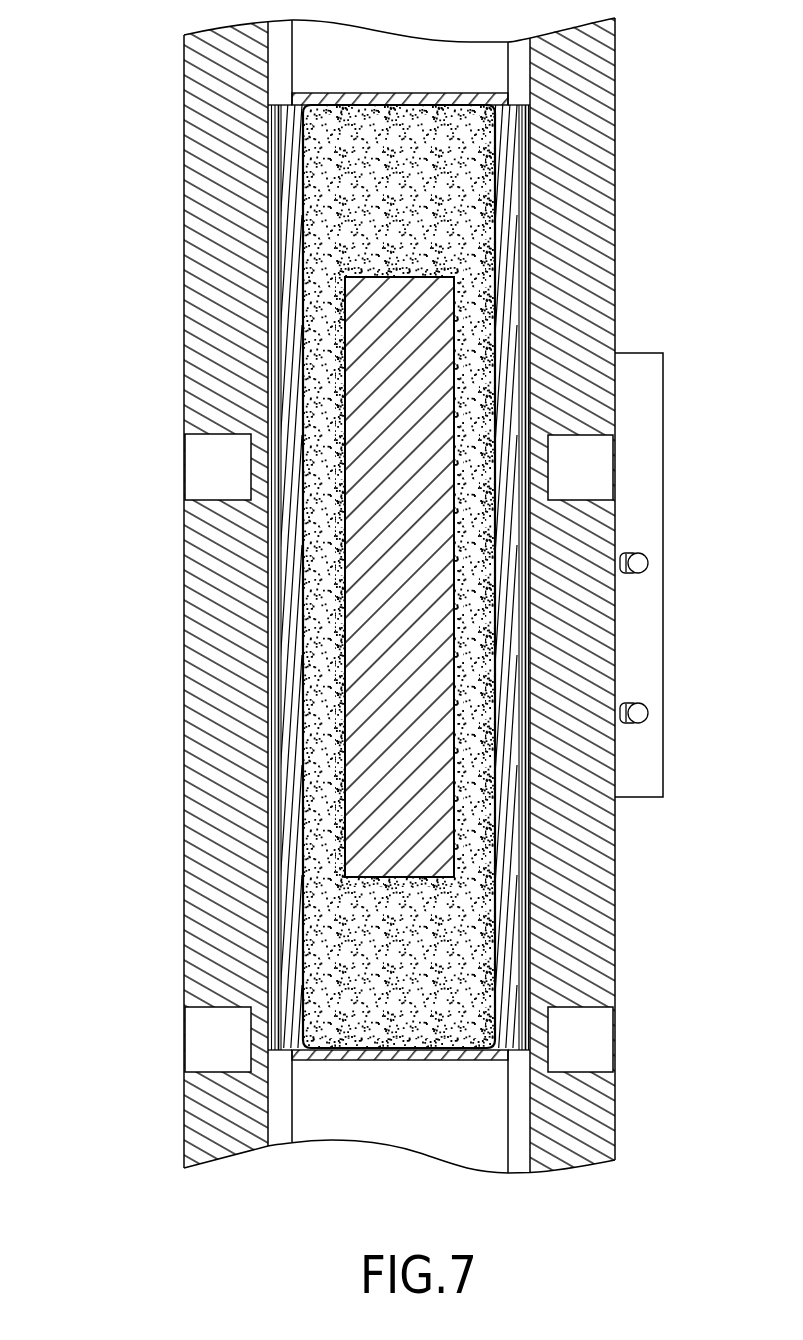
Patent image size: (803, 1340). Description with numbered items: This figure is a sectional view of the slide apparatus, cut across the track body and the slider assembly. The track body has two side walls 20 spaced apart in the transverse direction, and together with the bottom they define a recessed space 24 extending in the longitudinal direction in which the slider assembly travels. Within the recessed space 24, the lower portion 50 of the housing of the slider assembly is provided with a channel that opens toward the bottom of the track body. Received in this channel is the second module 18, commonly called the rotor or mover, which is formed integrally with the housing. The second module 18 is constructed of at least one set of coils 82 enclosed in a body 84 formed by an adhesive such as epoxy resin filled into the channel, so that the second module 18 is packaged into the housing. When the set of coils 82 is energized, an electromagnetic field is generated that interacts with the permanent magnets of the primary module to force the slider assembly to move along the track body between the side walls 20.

The second module 18 is at (512, 662).
The side walls 20 is at (227, 938).
The recessed space 24 is at (273, 292).
The lower portion of the housing 50 is at (505, 308).
The set of coils 82 is at (457, 765).
The body 84 is at (477, 842).